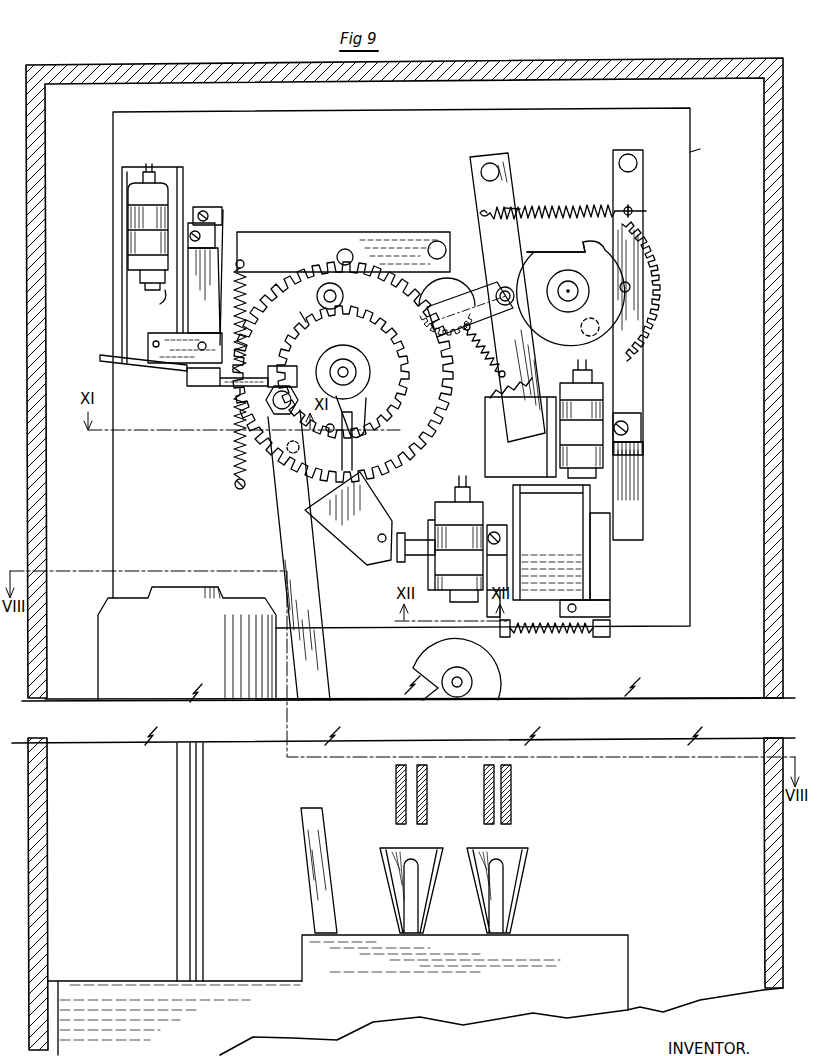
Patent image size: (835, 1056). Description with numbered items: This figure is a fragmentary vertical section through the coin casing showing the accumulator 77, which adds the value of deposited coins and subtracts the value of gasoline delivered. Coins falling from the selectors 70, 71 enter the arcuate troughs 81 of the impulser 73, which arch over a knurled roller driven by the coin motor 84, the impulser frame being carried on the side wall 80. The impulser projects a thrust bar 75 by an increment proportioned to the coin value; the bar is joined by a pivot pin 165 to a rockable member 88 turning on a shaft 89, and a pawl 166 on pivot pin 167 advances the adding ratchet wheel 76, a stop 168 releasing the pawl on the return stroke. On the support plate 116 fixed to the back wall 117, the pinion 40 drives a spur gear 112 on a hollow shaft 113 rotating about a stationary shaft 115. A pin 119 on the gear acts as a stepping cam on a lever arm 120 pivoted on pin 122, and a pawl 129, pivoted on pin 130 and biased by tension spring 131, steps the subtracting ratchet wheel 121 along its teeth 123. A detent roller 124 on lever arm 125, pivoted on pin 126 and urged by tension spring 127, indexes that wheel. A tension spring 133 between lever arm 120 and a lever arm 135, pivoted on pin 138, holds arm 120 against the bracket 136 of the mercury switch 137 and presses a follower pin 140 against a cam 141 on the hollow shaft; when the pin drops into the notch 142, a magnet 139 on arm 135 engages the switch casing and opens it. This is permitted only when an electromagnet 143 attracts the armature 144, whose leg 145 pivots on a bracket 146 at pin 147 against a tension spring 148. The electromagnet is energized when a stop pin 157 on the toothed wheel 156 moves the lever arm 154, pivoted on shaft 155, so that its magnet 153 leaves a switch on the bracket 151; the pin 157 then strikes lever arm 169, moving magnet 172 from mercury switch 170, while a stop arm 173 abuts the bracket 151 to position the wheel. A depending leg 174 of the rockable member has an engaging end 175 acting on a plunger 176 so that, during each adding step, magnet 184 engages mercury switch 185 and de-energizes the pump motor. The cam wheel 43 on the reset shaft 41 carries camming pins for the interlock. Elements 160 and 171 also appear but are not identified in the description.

The pinion 40 is at (463, 333).
The reset shaft 41 is at (457, 688).
The cam wheel 43 is at (420, 662).
The selector 70 is at (397, 806).
The selector 71 is at (485, 806).
The impulser 73 is at (566, 924).
The thrust bar 75 is at (288, 508).
The adding ratchet wheel 76 is at (378, 340).
The accumulator 77 is at (700, 154).
The side wall 80 is at (48, 880).
The trough 81 is at (383, 858).
The coin motor 84 is at (108, 632).
The rockable member 88 is at (278, 465).
The shaft 89 is at (341, 378).
The spur gear 112 is at (553, 204).
The hollow shaft 113 is at (555, 280).
The stationary shaft 115 is at (571, 289).
The support plate 116 is at (690, 191).
The back wall 117 is at (668, 697).
The pin 119 is at (580, 327).
The lever arm 120 is at (535, 430).
The subtracting ratchet wheel 121 is at (434, 437).
The pivot pin 122 is at (499, 165).
The teeth 123 is at (402, 280).
The detent roller 124 is at (337, 256).
The lever arm 125 is at (320, 233).
The pivot pin 126 is at (437, 241).
The tension spring 127 is at (236, 438).
The pawl 129 is at (481, 310).
The pivot pin 130 is at (504, 287).
The tension spring 131 is at (482, 358).
The tension spring 133 is at (550, 218).
The lever arm 135 is at (645, 185).
The bracket 136 is at (548, 455).
The mercury switch 137 is at (583, 478).
The pivot pin 138 is at (629, 154).
The magnet 139 is at (641, 424).
The follower pin 140 is at (625, 293).
The cam 141 is at (592, 246).
The notch 142 is at (584, 246).
The electromagnet 143 is at (560, 523).
The armature 144 is at (611, 560).
The leg 145 is at (611, 609).
The bracket 146 is at (118, 170).
The pivot pin 147 is at (588, 608).
The tension spring 148 is at (571, 633).
The bracket 151 is at (121, 335).
The magnet 153 is at (210, 211).
The lever arm 154 is at (226, 230).
The pivot shaft 155 is at (202, 352).
The toothed wheel 156 is at (300, 318).
The stop pin 157 is at (282, 362).
The pivot 160 is at (338, 298).
The pivot pin 165 is at (268, 398).
The pawl 166 is at (284, 376).
The pivot pin 167 is at (300, 447).
The stop 168 is at (358, 426).
The lever arm 169 is at (232, 384).
The mercury switch 170 is at (172, 290).
The bar 171 is at (210, 306).
The magnet 172 is at (190, 222).
The stop arm 173 is at (168, 372).
The depending leg 174 is at (386, 562).
The engaging end portion 175 is at (392, 526).
The plunger 176 is at (417, 548).
The magnet 184 is at (497, 530).
The mercury switch 185 is at (455, 515).